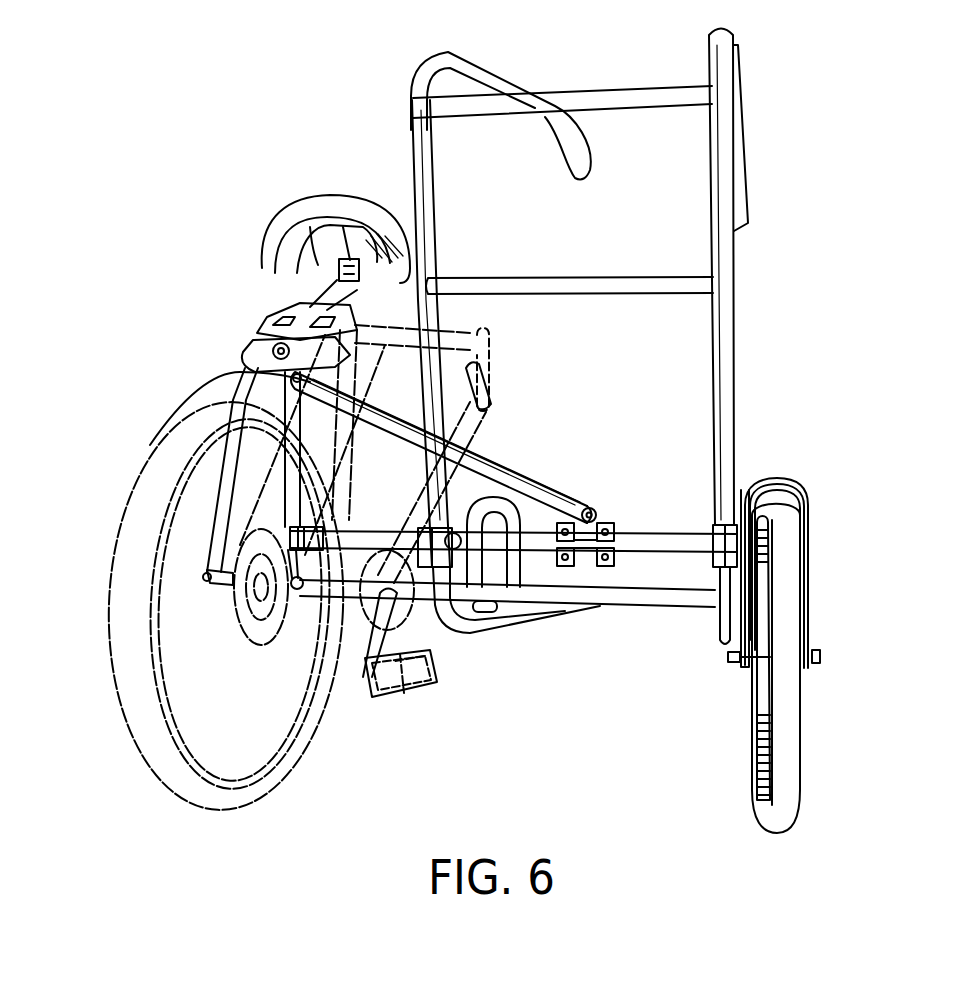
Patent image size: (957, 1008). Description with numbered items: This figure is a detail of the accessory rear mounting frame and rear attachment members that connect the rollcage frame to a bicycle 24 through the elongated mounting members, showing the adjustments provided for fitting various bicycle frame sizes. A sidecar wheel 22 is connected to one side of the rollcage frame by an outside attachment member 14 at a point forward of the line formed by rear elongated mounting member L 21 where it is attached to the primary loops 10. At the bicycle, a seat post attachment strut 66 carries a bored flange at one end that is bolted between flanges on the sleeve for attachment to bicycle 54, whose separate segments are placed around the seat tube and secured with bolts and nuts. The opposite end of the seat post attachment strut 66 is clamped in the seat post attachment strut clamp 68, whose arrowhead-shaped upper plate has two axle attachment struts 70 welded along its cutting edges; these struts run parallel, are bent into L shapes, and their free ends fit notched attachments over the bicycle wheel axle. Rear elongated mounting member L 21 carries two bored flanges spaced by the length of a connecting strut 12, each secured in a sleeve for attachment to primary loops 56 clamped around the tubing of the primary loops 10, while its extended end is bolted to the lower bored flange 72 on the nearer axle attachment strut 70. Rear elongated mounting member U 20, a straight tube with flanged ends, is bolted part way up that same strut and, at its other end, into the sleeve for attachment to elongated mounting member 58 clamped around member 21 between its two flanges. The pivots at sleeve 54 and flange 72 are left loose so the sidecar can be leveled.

The primary loops 10 is at (437, 280).
The connecting strut 12 is at (570, 103).
The outside attachment member 14 is at (812, 560).
The rear elongated mounting member U 20 is at (473, 457).
The rear elongated mounting member L 21 is at (413, 562).
The sidecar wheel 22 is at (787, 736).
The bicycle 24 is at (497, 336).
The sleeve for attachment to bicycle 54 is at (307, 290).
The sleeve for attachment to primary loops 56 is at (450, 525).
The sleeve for attachment to elongated mounting member 58 is at (600, 500).
The seat post attachment strut 66 is at (318, 306).
The seat post attachment strut clamp 68 is at (297, 283).
The axle attachment struts 70 is at (227, 460).
The lower bored flange 72 is at (247, 363).